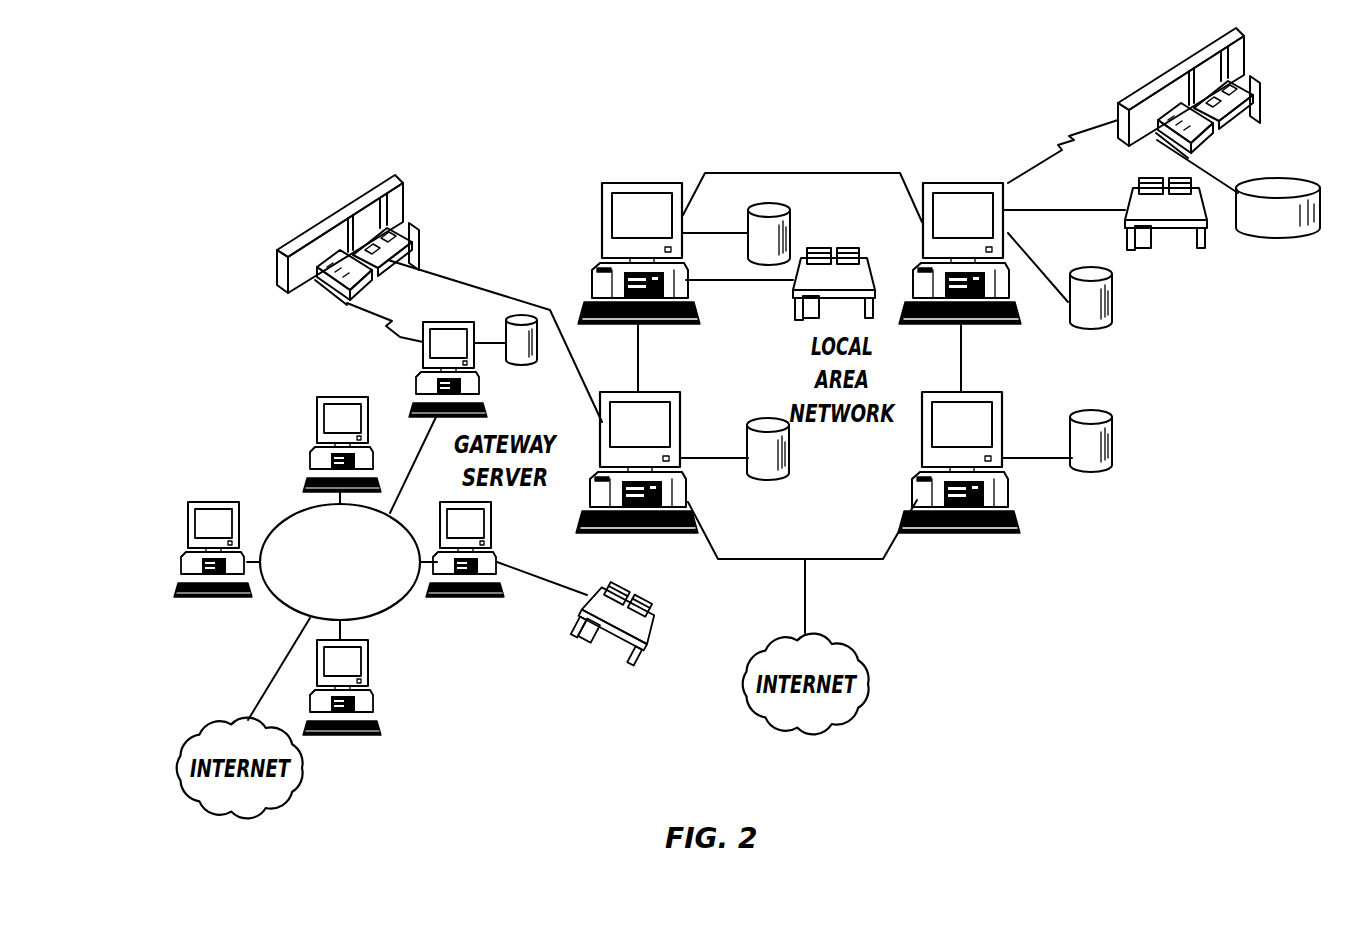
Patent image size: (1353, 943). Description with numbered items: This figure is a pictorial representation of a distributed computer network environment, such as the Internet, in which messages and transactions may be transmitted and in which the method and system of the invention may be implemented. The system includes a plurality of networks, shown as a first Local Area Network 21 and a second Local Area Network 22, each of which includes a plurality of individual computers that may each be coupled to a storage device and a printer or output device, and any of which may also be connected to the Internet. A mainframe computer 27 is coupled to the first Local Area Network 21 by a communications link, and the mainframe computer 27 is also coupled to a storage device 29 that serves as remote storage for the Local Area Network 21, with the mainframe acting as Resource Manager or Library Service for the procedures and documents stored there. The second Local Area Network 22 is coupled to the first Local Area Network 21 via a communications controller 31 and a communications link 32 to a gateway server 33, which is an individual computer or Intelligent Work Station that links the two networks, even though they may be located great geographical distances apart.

The local area network 21 is at (799, 403).
The local area network 22 is at (319, 577).
The mainframe computer 27 is at (1189, 89).
The storage device 29 is at (1290, 186).
The communications controller 31 is at (373, 224).
The communications link 32 is at (365, 337).
The gateway server 33 is at (457, 356).